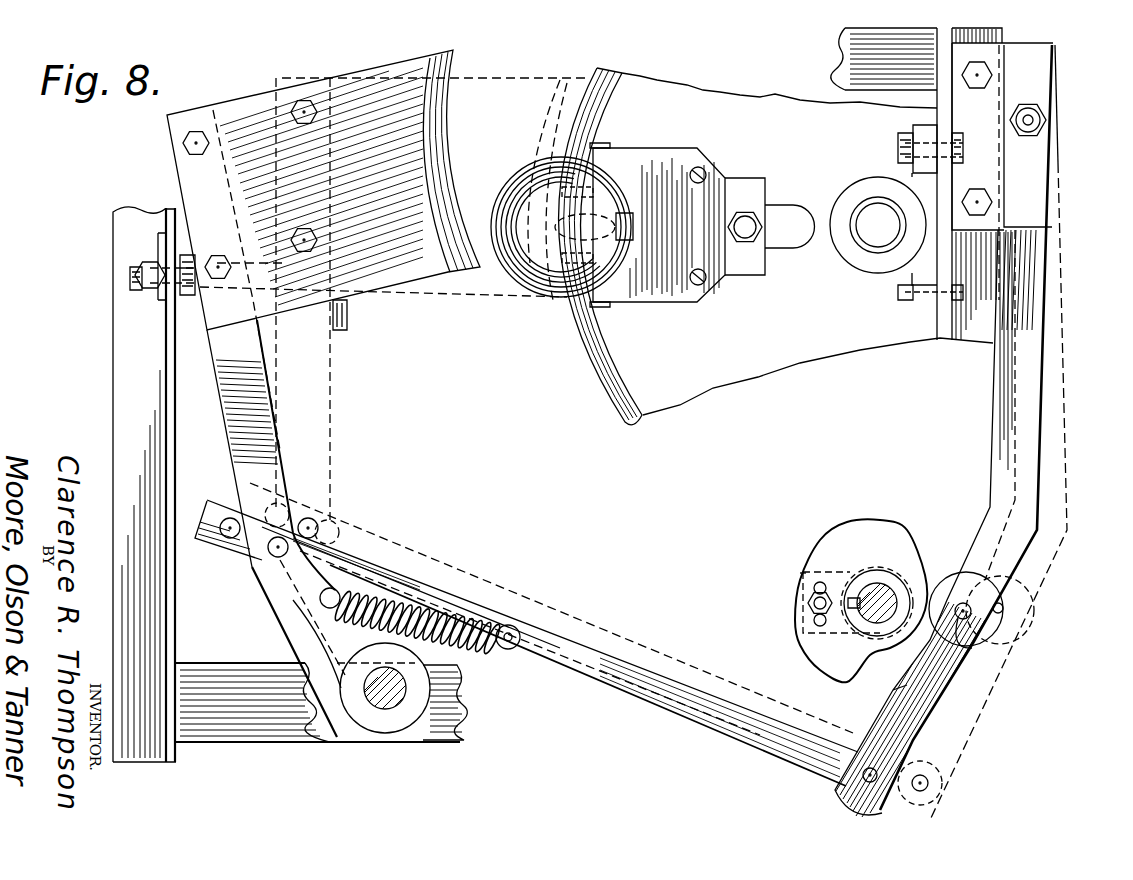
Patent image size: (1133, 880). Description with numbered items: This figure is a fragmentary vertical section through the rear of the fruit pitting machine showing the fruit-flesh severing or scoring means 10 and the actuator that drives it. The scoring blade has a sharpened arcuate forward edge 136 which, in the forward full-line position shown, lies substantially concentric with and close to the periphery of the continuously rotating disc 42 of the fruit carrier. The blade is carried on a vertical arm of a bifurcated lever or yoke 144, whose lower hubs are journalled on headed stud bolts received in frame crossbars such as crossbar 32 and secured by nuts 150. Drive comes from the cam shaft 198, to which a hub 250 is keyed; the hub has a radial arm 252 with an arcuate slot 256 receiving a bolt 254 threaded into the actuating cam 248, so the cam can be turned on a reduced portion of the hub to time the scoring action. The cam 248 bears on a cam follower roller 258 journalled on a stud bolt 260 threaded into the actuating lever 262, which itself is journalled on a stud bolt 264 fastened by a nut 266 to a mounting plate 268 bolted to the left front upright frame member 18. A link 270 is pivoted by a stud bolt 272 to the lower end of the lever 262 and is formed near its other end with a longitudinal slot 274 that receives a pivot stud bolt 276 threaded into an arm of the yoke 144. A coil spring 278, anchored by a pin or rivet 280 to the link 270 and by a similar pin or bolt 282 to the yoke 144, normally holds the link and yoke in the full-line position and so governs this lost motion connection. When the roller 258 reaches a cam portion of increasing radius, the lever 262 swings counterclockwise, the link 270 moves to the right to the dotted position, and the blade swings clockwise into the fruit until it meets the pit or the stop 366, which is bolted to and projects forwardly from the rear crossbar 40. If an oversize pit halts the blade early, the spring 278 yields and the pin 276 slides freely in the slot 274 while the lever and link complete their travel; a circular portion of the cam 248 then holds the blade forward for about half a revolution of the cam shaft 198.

The fruit-flesh severing or scoring means 10 is at (366, 77).
The arcuate forward edge 136 is at (455, 63).
The crossbar 40 is at (167, 307).
The stop 366 is at (350, 324).
The bifurcated lever or yoke 144 is at (225, 447).
The longitudinal slot 274 is at (232, 540).
The pivot stud bolt 276 is at (280, 563).
The pin, pivot or bolt 282 is at (328, 640).
The coil spring 278 is at (460, 615).
The pin or rivet 280 is at (508, 650).
The link 270 is at (590, 672).
The crossbar 32 is at (288, 727).
The nuts 150 is at (385, 705).
The continuously rotating disc 42 is at (620, 393).
The left, front, upright member 18 is at (973, 330).
The mounting plate 268 is at (973, 230).
The stud bolt 264 is at (1033, 119).
The nut 266 is at (1028, 132).
The actuating lever 262 is at (1003, 453).
The stud bolt 272 is at (865, 778).
The actuating cam 248 is at (877, 527).
The cam shaft 198 is at (872, 592).
The hub 250 is at (863, 628).
The radial arm 252 is at (832, 573).
The bolt 254 is at (808, 604).
The arcuate slot 256 is at (800, 573).
The cam follower roller 258 is at (940, 593).
The stud bolt 260 is at (963, 640).